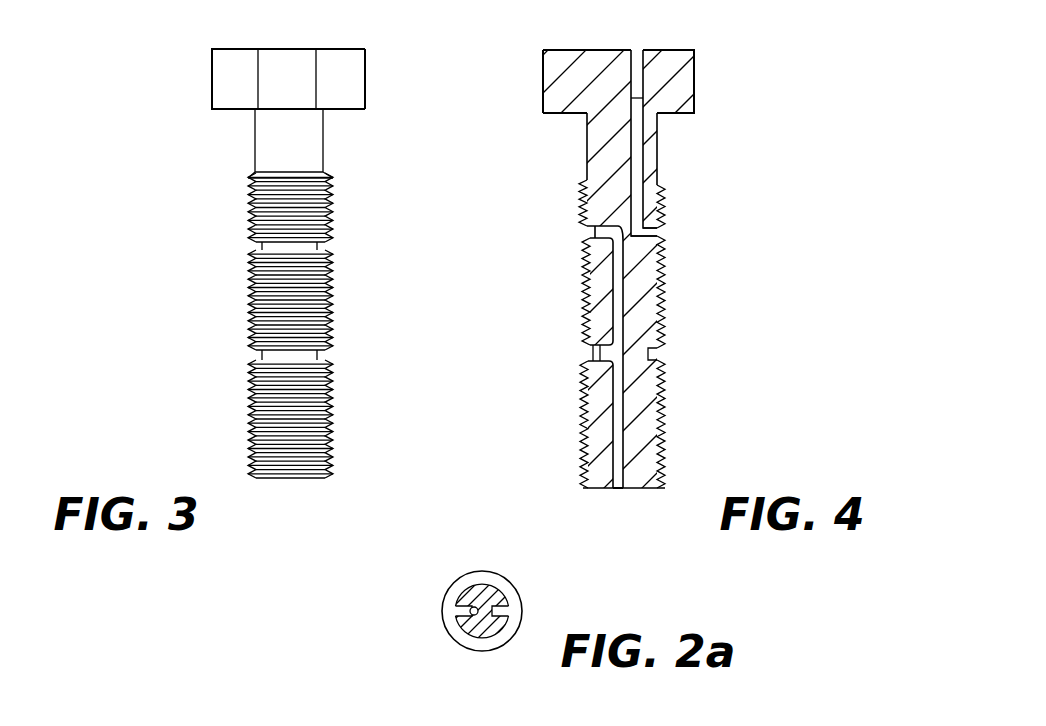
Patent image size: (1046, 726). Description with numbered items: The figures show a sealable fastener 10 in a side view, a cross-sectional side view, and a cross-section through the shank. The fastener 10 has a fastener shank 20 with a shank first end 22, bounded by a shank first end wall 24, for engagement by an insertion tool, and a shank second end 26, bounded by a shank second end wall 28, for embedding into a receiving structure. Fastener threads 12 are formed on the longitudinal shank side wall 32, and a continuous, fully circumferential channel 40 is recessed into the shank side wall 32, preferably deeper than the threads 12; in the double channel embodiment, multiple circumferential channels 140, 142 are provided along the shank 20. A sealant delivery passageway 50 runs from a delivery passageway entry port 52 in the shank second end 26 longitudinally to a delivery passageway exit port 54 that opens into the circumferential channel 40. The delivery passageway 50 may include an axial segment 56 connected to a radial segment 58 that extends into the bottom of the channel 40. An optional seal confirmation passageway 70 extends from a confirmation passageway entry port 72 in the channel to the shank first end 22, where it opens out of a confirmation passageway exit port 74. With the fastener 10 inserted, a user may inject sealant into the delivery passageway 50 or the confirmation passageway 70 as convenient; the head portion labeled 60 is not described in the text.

In FIG. 3, the sealable fastener 10 is at (382, 244).
In FIG. 4, the sealable fastener 10 is at (515, 211).
In FIG. 3, the fastener threads 12 is at (248, 312).
In FIG. 4, the fastener threads 12 is at (668, 426).
In FIG. 3, the fastener shank 20 is at (325, 136).
In FIG. 4, the fastener shank 20 is at (660, 150).
In FIG. 2a, the fastener shank 20 is at (463, 578).
In FIG. 3, the shank first end 22 is at (365, 100).
In FIG. 4, the shank first end 22 is at (543, 108).
In FIG. 3, the shank first end wall 24 is at (228, 49).
In FIG. 4, the shank first end wall 24 is at (556, 50).
In FIG. 3, the shank second end 26 is at (252, 470).
In FIG. 4, the shank second end 26 is at (580, 462).
In FIG. 3, the shank second end wall 28 is at (316, 514).
In FIG. 4, the shank second end wall 28 is at (652, 0).
In FIG. 3, the longitudinal shank side wall 32 is at (335, 398).
In FIG. 4, the longitudinal shank side wall 32 is at (665, 297).
In FIG. 2a, the longitudinal shank side wall 32 is at (446, 594).
In FIG. 2a, the circumferential channel 40 is at (491, 588).
In FIG. 4, the sealant delivery passageway 50 is at (620, 278).
In FIG. 4, the delivery passageway entry port 52 is at (620, 488).
In FIG. 3, the delivery passageway exit port 54 is at (262, 244).
In FIG. 4, the delivery passageway exit port 54 is at (584, 232).
In FIG. 2a, the delivery passageway exit port 54 is at (458, 612).
In FIG. 4, the axial segment 56 is at (645, 98).
In FIG. 4, the radial segment 58 is at (590, 343).
In FIG. 3, the head side 60 is at (368, 81).
In FIG. 4, the head side 60 is at (543, 86).
In FIG. 4, the seal confirmation passageway 70 is at (643, 192).
In FIG. 4, the confirmation passageway entry port 72 is at (660, 222).
In FIG. 2a, the confirmation passageway entry port 72 is at (512, 612).
In FIG. 4, the confirmation passageway exit port 74 is at (640, 50).
In FIG. 3, the circumferential channel 140 is at (318, 243).
In FIG. 4, the circumferential channel 140 is at (660, 236).
In FIG. 3, the circumferential channel 142 is at (320, 357).
In FIG. 4, the circumferential channel 142 is at (660, 352).